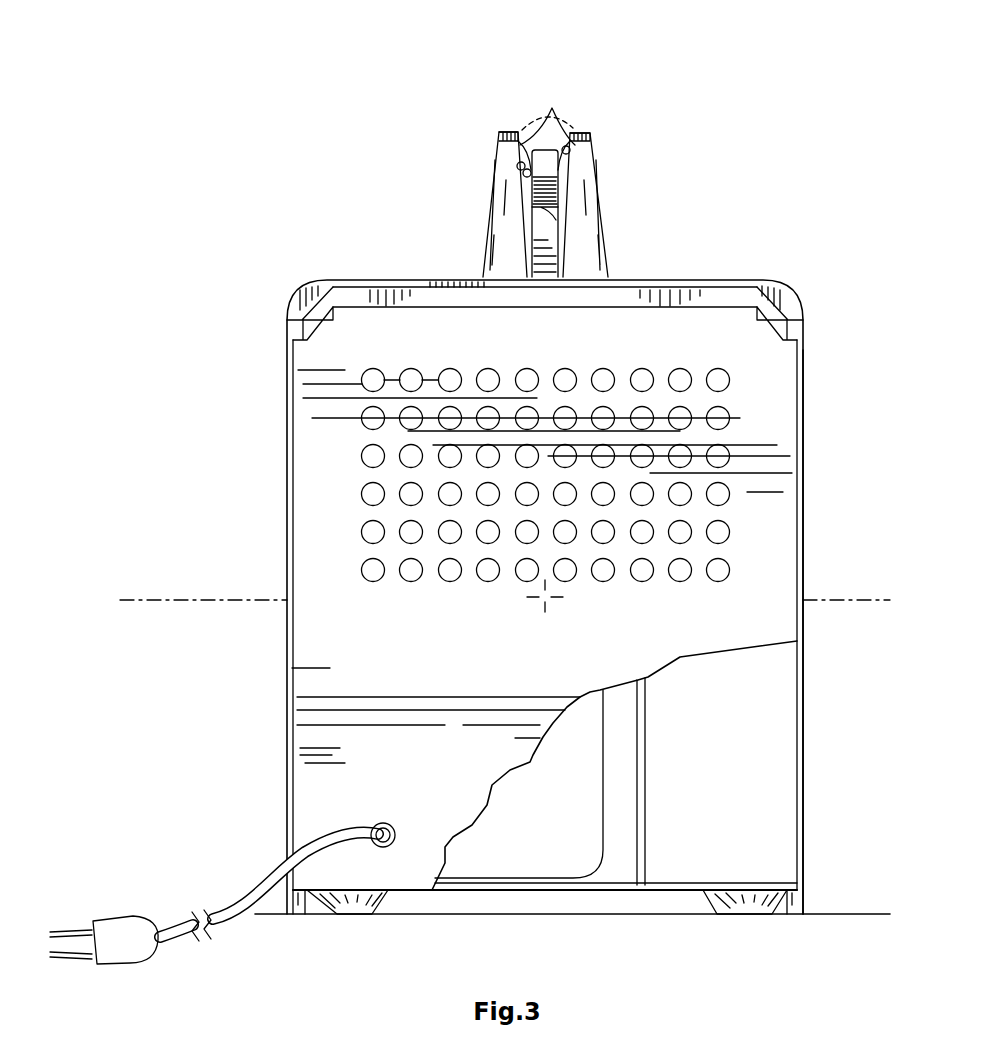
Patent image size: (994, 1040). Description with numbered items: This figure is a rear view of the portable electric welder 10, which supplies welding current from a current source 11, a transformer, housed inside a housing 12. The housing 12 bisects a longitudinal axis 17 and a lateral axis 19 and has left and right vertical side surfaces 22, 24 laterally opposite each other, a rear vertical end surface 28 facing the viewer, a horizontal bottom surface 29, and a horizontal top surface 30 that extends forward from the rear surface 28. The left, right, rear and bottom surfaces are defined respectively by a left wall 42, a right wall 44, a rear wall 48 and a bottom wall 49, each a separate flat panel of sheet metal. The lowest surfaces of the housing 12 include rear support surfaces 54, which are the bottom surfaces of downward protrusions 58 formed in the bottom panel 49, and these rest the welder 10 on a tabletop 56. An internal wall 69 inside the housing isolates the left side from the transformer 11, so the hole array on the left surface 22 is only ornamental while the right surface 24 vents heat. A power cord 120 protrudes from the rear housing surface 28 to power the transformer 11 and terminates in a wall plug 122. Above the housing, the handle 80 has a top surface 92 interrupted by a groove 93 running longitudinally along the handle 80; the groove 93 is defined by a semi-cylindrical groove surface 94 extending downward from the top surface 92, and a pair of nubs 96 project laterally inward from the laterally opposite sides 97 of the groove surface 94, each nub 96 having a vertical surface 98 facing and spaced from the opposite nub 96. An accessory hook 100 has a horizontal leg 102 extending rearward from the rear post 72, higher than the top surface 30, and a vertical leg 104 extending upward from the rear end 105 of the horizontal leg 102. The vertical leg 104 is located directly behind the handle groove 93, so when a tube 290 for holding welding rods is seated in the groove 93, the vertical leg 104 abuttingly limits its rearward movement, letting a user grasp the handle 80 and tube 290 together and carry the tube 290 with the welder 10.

The welder 10 is at (740, 105).
The current source 11 is at (614, 765).
The housing 12 is at (392, 278).
The longitudinal axis 17 is at (553, 602).
The lateral axis 19 is at (843, 592).
The left vertical side surface 22 is at (803, 728).
The right vertical side surface 24 is at (288, 688).
The rear vertical end surface 28 is at (545, 509).
The horizontal bottom surface 29 is at (572, 898).
The horizontal top surface 30 is at (710, 278).
The left wall 42 is at (803, 782).
The right wall 44 is at (288, 745).
The rear wall 48 is at (730, 278).
The bottom wall 49 is at (668, 895).
The rear support surface 54 is at (352, 912).
The tabletop 56 is at (822, 915).
The downward protrusion 58 is at (380, 900).
The internal wall 69 is at (645, 817).
The rear post 72 is at (603, 245).
The handle 80 is at (497, 132).
The top surface 92 is at (508, 133).
The groove 93 is at (531, 78).
The groove surface 94 is at (528, 176).
The nub 96 is at (517, 135).
The laterally opposite sides 97 is at (525, 172).
The vertical surface 98 is at (552, 110).
The accessory hook 100 is at (556, 190).
The horizontal leg 102 is at (558, 218).
The vertical leg 104 is at (556, 180).
The rear end 105 is at (556, 203).
The power cord 120 is at (227, 913).
The wall plug 122 is at (115, 937).
The tube 290 is at (563, 125).